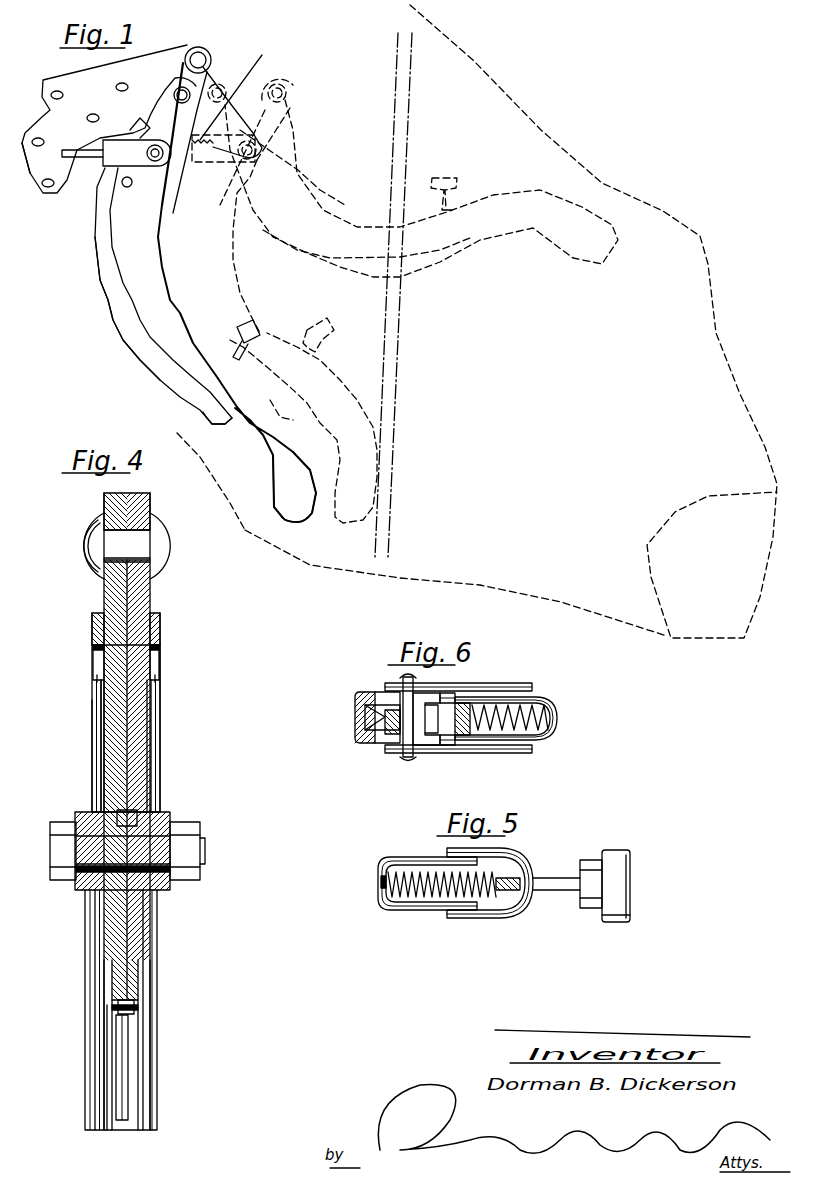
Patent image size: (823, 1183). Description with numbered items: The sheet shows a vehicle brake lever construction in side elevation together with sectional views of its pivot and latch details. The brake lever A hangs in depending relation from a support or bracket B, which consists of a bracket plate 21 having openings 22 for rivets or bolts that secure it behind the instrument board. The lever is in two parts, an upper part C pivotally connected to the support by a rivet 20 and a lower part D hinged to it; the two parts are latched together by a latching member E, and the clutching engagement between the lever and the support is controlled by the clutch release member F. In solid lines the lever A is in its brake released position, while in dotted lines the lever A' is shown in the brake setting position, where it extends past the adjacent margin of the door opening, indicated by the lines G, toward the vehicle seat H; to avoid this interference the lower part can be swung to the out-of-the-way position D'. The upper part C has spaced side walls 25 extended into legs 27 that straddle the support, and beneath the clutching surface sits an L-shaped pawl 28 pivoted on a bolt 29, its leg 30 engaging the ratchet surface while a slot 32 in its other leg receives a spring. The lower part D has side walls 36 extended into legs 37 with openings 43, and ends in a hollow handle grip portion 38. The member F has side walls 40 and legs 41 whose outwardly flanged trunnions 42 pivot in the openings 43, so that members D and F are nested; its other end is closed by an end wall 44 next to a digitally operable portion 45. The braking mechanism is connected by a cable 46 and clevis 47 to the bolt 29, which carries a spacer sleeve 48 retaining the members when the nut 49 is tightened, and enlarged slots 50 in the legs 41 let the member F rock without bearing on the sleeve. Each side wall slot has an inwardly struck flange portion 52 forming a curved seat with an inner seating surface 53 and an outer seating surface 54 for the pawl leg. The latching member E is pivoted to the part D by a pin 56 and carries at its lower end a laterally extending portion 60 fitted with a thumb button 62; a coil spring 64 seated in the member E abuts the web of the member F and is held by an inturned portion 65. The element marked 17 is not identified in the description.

In FIG. 1, the brake lever A is at (143, 296).
In FIG. 1, the brake lever in brake setting position A' is at (421, 188).
In FIG. 1, the support or bracket B is at (58, 82).
In FIG. 4, the support or bracket B is at (135, 583).
In FIG. 1, the upper lever part C is at (196, 80).
In FIG. 4, the upper lever part C is at (150, 597).
In FIG. 6, the upper lever part C is at (557, 720).
In FIG. 1, the lower lever part D is at (228, 363).
In FIG. 4, the lower lever part D is at (175, 728).
In FIG. 6, the lower lever part D is at (481, 716).
In FIG. 5, the lower lever part D is at (490, 898).
In FIG. 1, the out-of-the-way position of lever part D' is at (303, 341).
In FIG. 1, the latching member E is at (300, 162).
In FIG. 4, the latching member E is at (128, 1040).
In FIG. 6, the latching member E is at (372, 722).
In FIG. 1, the clutch release member F is at (160, 370).
In FIG. 4, the clutch release member F is at (95, 735).
In FIG. 6, the clutch release member F is at (355, 715).
In FIG. 5, the clutch release member F is at (405, 908).
In FIG. 1, the door opening margin line G is at (450, 30).
In FIG. 1, the vehicle seat H is at (660, 500).
In FIG. 4, the wall 17 is at (92, 812).
In FIG. 1, the rivet 20 is at (198, 47).
In FIG. 4, the rivet 20 is at (155, 535).
In FIG. 1, the bracket plate 21 is at (40, 110).
In FIG. 4, the bracket plate 21 is at (135, 500).
In FIG. 1, the openings 22 is at (90, 108).
In FIG. 4, the side walls 25 is at (116, 620).
In FIG. 4, the spaced legs 27 is at (104, 504).
In FIG. 4, the pawl 28 is at (138, 820).
In FIG. 4, the bolt 29 is at (50, 838).
In FIG. 6, the pawl leg 30 is at (462, 712).
In FIG. 6, the slot 32 is at (548, 712).
In FIG. 4, the side walls 36 is at (85, 923).
In FIG. 4, the legs 37 is at (92, 627).
In FIG. 1, the handle grip portion 38 is at (275, 477).
In FIG. 4, the side walls 40 is at (95, 945).
In FIG. 4, the legs 41 is at (100, 700).
In FIG. 4, the trunnions 42 is at (98, 672).
In FIG. 4, the openings 43 is at (96, 677).
In FIG. 1, the end wall 44 is at (228, 424).
In FIG. 1, the digitally operable portion 45 is at (205, 416).
In FIG. 1, the cable 46 is at (66, 148).
In FIG. 1, the clevis 47 is at (115, 170).
In FIG. 4, the clevis 47 is at (172, 812).
In FIG. 4, the spacer sleeve 48 is at (130, 878).
In FIG. 4, the nut 49 is at (205, 836).
In FIG. 6, the enlarged slots 50 is at (382, 745).
In FIG. 6, the flange portion 52 is at (445, 696).
In FIG. 6, the inner seating surface 53 is at (440, 740).
In FIG. 6, the outer seating surface 54 is at (412, 692).
In FIG. 6, the pin 56 is at (404, 760).
In FIG. 1, the laterally extending portion 60 is at (233, 335).
In FIG. 5, the laterally extending portion 60 is at (560, 878).
In FIG. 1, the thumb button 62 is at (255, 325).
In FIG. 5, the thumb button 62 is at (620, 922).
In FIG. 5, the coil spring 64 is at (418, 905).
In FIG. 5, the inturned portion 65 is at (375, 882).